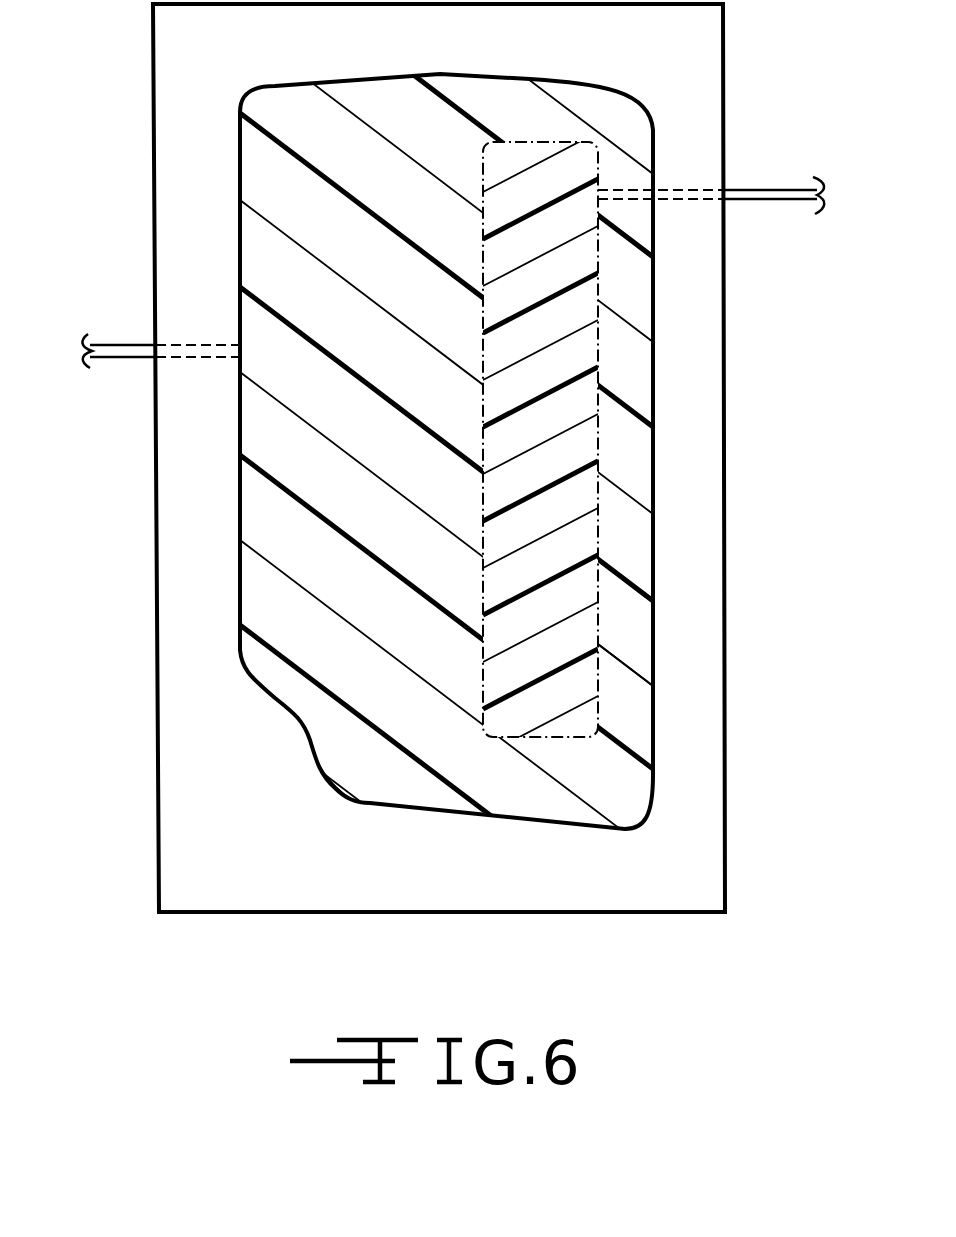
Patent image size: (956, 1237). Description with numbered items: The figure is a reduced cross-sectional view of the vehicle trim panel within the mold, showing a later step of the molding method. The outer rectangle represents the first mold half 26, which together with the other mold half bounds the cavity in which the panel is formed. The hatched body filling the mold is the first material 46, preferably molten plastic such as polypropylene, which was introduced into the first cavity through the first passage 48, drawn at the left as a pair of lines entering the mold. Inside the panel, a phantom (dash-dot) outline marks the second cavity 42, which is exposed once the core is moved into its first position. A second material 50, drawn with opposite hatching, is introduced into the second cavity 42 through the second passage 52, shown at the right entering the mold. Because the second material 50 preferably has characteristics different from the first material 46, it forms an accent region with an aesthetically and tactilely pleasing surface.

The first mold half 26 is at (175, 176).
The second cavity 42 is at (598, 332).
The first material 46 is at (635, 675).
The first passage 48 is at (110, 360).
The second material 50 is at (578, 442).
The second passage 52 is at (775, 203).